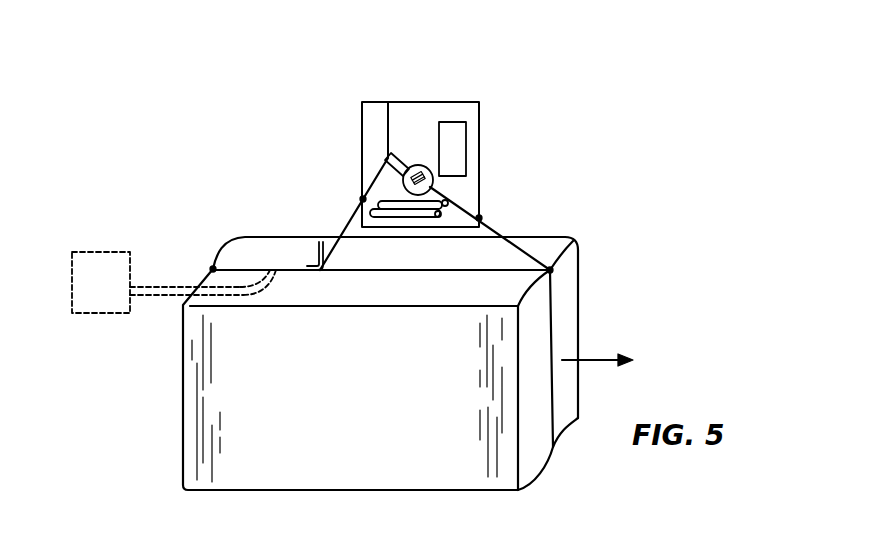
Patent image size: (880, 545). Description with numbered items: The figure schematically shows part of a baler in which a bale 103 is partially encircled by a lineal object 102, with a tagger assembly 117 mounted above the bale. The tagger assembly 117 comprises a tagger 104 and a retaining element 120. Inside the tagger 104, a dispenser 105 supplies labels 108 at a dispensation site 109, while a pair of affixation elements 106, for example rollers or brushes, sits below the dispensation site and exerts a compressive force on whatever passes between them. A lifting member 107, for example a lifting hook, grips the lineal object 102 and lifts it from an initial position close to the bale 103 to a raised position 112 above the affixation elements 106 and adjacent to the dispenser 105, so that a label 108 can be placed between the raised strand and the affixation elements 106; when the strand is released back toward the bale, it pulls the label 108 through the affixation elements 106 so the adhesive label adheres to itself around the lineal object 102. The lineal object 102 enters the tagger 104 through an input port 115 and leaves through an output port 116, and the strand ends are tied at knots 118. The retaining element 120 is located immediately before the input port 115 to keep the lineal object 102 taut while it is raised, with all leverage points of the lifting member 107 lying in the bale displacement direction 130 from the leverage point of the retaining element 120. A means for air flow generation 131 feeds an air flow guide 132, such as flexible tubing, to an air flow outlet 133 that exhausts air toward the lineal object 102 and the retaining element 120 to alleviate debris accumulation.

The lineal object 102 is at (553, 310).
The bale 103 is at (195, 338).
The tagger 104 is at (479, 113).
The dispenser 105 is at (467, 142).
The affixation elements 106 is at (446, 200).
The lifting member 107 is at (388, 120).
The label 108 is at (421, 164).
The dispensation site 109 is at (393, 164).
The raised position 112 is at (498, 237).
The input port 115 is at (362, 200).
The output port 116 is at (480, 218).
The tagger assembly 117 is at (406, 150).
The knot 118 is at (213, 269).
The retaining element 120 is at (306, 242).
The bale displacement direction 130 is at (592, 358).
The means for air flow generation 131 is at (93, 250).
The air flow guide 132 is at (165, 287).
The air flow outlet 133 is at (272, 269).